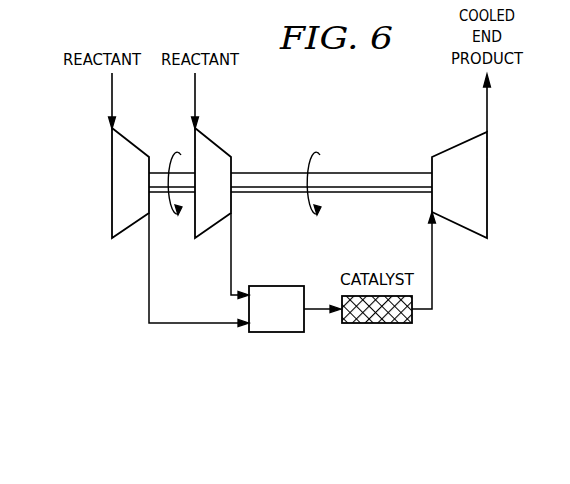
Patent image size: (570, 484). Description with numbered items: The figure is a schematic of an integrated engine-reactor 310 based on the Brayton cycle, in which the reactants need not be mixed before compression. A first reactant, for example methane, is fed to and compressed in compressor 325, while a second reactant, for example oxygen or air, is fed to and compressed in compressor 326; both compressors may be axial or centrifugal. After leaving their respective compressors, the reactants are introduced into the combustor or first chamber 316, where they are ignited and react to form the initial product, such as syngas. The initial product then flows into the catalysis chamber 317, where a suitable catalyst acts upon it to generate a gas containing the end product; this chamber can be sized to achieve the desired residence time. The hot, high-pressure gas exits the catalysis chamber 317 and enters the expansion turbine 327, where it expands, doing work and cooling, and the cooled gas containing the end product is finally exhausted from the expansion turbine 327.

The engine-reactor 310 is at (339, 132).
The compressor 325 is at (130, 144).
The compressor 326 is at (222, 145).
The expansion turbine 327 is at (489, 152).
The combustor or first chamber 316 is at (274, 286).
The catalysis chamber 317 is at (412, 318).